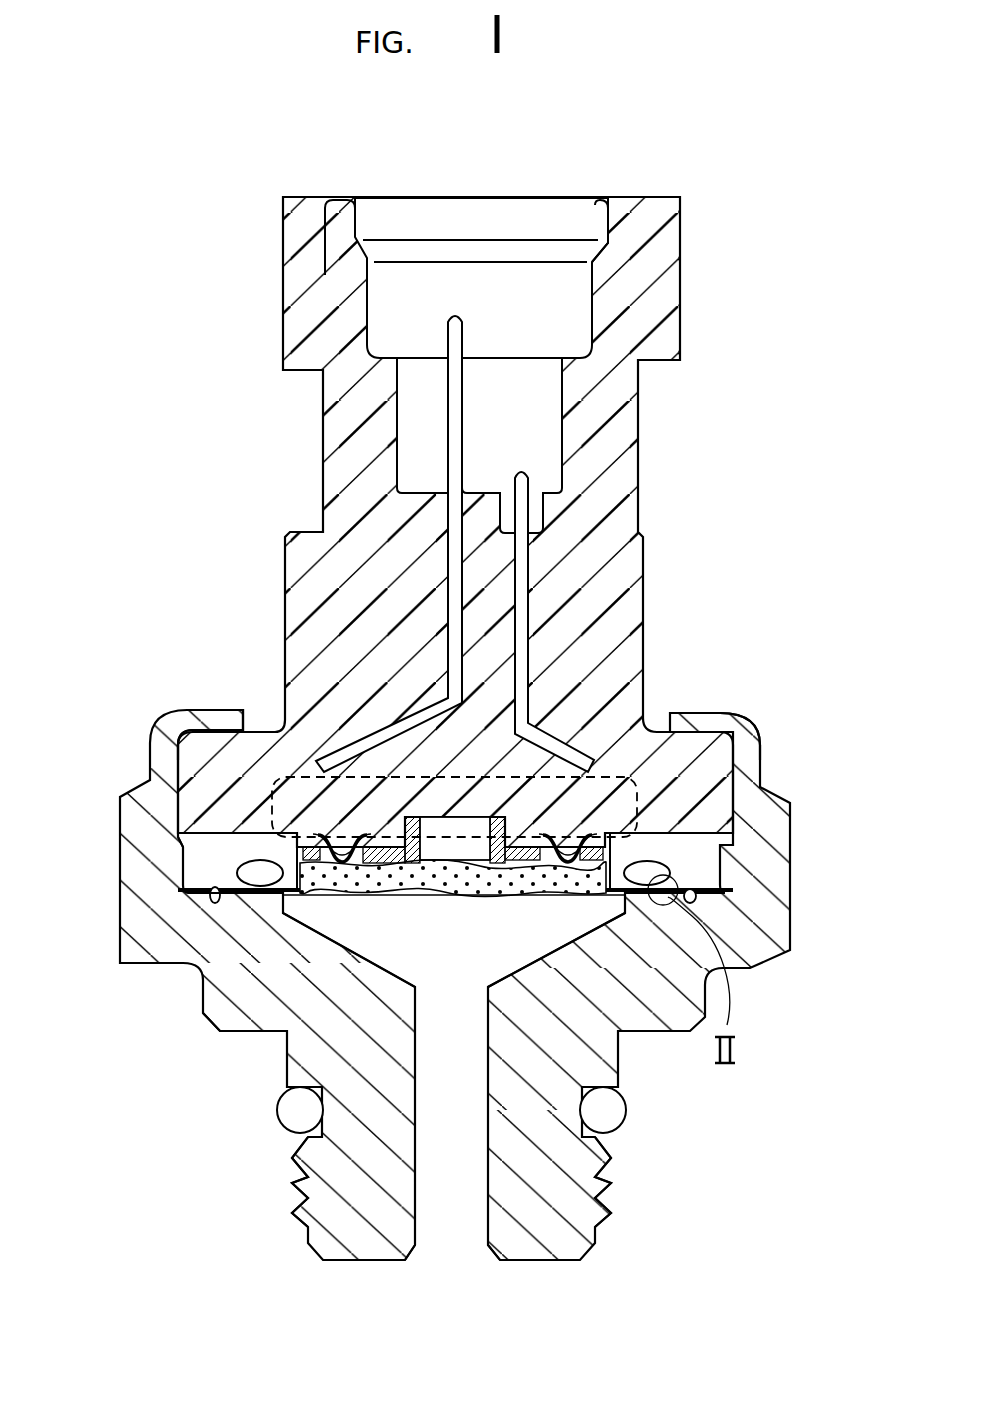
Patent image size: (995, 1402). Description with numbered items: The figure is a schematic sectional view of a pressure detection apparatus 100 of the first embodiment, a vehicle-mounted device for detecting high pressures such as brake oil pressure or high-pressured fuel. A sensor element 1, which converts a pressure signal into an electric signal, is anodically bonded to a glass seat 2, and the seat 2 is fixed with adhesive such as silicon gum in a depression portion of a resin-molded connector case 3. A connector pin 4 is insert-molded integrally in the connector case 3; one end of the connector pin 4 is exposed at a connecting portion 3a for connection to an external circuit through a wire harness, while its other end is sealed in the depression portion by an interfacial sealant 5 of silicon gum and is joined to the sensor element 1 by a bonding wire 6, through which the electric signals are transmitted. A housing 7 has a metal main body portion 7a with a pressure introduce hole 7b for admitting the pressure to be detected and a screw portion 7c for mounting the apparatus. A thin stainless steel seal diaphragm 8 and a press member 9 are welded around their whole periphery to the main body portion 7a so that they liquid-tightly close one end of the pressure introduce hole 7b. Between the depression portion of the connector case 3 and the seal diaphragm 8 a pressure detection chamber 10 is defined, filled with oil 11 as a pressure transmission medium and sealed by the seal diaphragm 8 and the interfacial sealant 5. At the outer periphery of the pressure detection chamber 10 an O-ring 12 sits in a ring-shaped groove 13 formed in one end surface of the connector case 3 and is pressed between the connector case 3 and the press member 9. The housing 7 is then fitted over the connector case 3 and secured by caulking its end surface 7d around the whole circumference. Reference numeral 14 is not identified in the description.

The pressure detection apparatus 100 is at (699, 285).
The sensor element 1 is at (472, 818).
The seat 2 is at (560, 738).
The connector case 3 is at (612, 446).
The connecting portion 3a is at (600, 208).
The connector pin 4 is at (453, 448).
The interfacial sealant 5 is at (300, 802).
The bonding wire 6 is at (345, 893).
The housing 7 is at (110, 915).
The main body portion 7a is at (253, 1029).
The pressure introduce hole 7b is at (483, 1212).
The screw portion 7c is at (612, 1220).
The end surface 7d is at (700, 712).
The seal diaphragm 8 is at (661, 1031).
The press member 9 is at (182, 897).
The pressure detection chamber 10 is at (284, 1070).
The oil 11 is at (556, 950).
The O-ring 12 is at (248, 872).
The groove 13 is at (180, 843).
The O-ring 14 is at (200, 863).